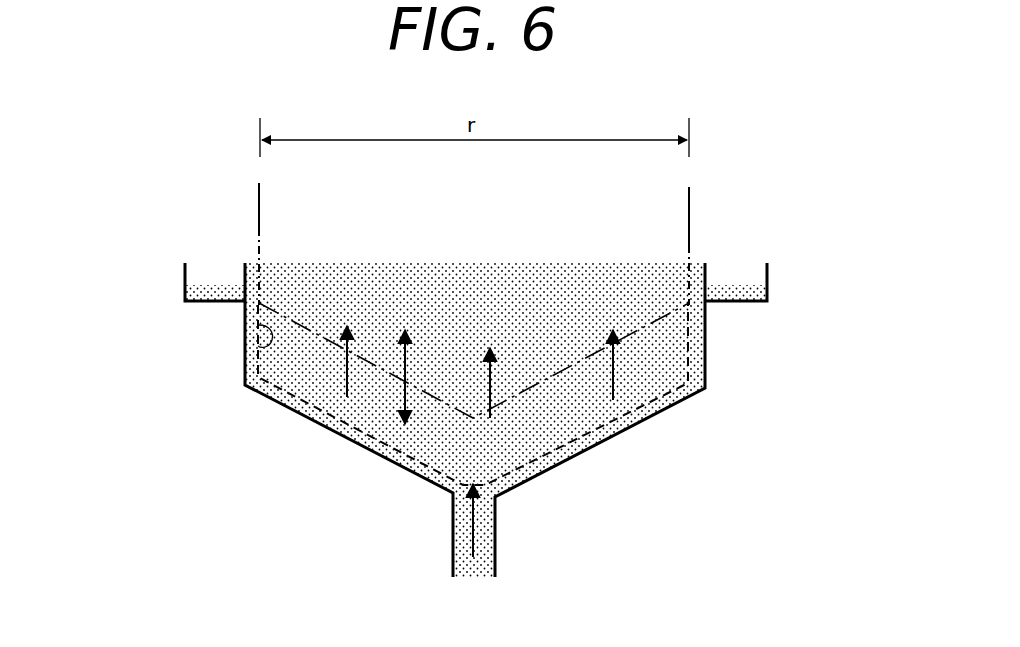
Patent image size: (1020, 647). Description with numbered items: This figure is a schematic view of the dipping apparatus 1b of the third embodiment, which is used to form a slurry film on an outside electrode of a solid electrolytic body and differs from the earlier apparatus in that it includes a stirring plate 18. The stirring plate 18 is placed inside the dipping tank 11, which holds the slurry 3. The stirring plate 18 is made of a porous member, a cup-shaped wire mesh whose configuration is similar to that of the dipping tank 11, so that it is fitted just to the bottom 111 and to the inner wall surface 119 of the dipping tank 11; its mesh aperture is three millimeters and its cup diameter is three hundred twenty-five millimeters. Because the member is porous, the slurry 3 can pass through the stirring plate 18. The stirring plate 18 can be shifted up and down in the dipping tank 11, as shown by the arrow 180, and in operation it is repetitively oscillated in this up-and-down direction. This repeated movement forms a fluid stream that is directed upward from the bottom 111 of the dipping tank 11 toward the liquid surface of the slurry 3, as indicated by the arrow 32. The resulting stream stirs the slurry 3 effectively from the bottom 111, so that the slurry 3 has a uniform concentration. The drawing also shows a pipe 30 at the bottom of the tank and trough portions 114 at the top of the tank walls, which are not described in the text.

The dipping apparatus 1b is at (255, 490).
The slurry 3 is at (550, 298).
The dipping tank 11 is at (272, 402).
The stirring plate 18 is at (690, 242).
The gas inlet pipe 30 is at (477, 527).
The arrow indicating fluid stream 32 is at (620, 380).
The bottom 111 is at (338, 430).
The overflow trough 114 is at (185, 272).
The inner wall surface 119 is at (259, 346).
The arrow indicating up-and-down movement 180 is at (408, 414).